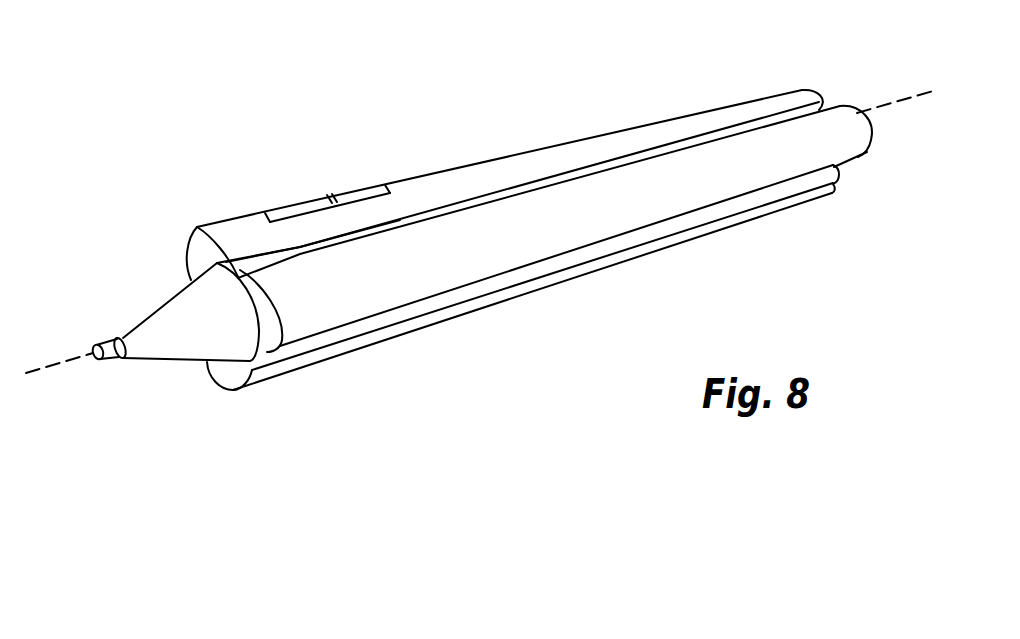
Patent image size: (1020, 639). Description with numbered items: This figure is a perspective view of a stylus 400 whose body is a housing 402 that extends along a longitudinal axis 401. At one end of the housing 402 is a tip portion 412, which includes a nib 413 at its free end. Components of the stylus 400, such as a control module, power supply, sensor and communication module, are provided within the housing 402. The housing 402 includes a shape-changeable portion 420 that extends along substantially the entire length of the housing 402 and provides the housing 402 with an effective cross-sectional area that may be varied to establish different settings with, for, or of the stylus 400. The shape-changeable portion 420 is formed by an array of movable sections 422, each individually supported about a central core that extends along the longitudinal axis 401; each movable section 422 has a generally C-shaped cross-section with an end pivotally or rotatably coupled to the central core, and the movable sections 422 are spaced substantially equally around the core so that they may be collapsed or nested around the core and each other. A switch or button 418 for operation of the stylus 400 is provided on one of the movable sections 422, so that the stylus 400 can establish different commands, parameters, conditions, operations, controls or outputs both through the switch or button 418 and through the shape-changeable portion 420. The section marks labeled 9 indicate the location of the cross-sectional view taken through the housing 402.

The stylus 400 is at (106, 66).
The longitudinal axis 401 is at (912, 95).
The housing 402 is at (675, 79).
The tip portion 412 is at (126, 292).
The nib 413 is at (95, 348).
The switch or button 418 is at (353, 195).
The shape-changeable portion 420 is at (396, 134).
The movable sections 422 is at (507, 168).
The section line 9- 9 is at (553, 132).